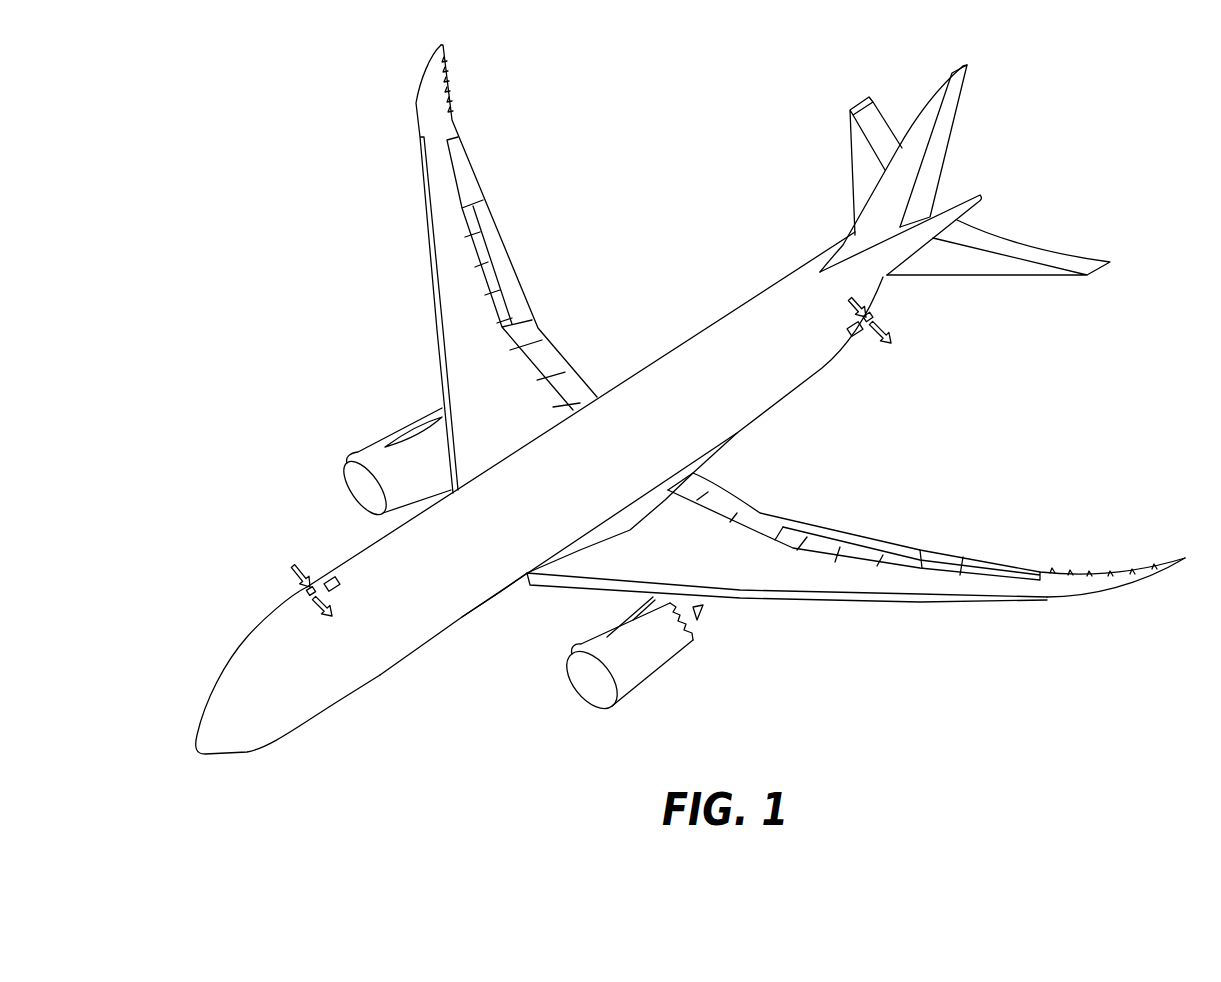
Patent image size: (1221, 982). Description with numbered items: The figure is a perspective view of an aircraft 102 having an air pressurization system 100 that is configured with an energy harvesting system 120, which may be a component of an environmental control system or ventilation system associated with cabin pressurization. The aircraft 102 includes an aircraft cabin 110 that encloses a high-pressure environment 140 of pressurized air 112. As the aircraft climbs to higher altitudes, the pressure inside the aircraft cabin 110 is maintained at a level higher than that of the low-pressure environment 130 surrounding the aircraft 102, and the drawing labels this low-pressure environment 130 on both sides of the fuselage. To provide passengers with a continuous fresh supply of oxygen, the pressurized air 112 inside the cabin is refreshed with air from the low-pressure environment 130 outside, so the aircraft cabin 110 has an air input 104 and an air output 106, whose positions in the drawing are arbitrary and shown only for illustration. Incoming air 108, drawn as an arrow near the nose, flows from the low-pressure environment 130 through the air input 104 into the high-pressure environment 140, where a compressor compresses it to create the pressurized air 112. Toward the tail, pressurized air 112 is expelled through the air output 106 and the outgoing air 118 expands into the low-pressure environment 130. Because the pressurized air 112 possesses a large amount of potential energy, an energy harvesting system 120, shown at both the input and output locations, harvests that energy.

The air pressurization system 100 is at (229, 169).
The aircraft 102 is at (216, 690).
The air input 104 is at (306, 589).
The air output 106 is at (888, 310).
The incoming air 108 is at (285, 565).
The aircraft cabin 110 is at (715, 405).
The pressurized air 112 is at (589, 458).
The outgoing air 118 is at (895, 344).
The energy harvesting system 120 is at (341, 583).
The low-pressure environment 130 is at (635, 432).
The high-pressure environment 140 is at (556, 493).